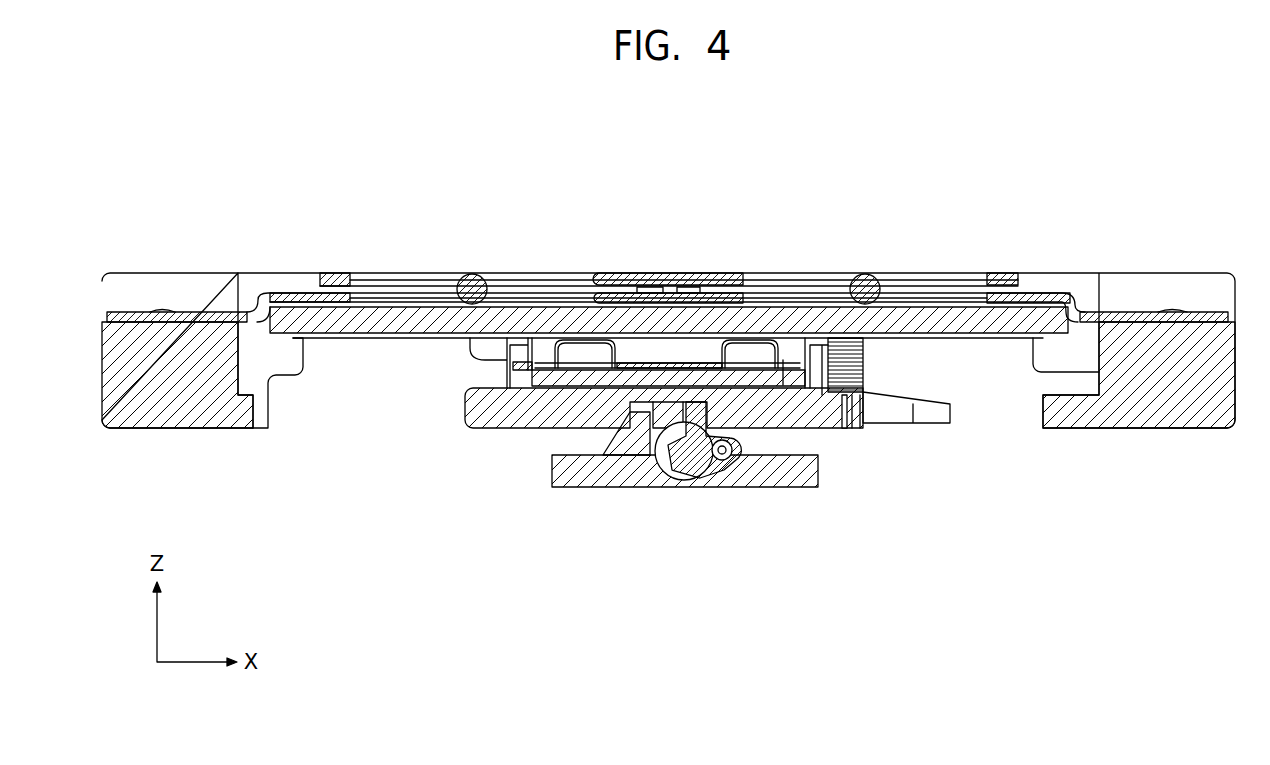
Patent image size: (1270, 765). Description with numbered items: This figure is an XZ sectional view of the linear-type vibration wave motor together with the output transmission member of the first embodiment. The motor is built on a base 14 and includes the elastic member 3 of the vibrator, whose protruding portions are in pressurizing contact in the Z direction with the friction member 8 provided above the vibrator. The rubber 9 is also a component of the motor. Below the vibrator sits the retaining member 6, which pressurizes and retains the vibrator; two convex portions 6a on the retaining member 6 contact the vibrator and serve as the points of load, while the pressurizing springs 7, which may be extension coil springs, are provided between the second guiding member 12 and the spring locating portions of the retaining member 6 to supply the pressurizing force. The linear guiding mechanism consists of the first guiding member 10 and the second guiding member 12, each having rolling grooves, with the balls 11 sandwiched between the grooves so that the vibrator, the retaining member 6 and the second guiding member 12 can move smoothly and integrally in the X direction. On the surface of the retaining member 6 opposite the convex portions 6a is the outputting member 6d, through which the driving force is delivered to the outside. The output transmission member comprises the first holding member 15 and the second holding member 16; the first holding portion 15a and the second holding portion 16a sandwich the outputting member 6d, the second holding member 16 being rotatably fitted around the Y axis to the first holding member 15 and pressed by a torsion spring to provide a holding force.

The elastic member 3 is at (684, 365).
The retaining member 6 is at (491, 415).
The convex portions 6a is at (666, 386).
The outputting member 6d is at (675, 400).
The pressurizing springs 7 is at (855, 385).
The friction member 8 is at (388, 320).
The rubber 9 is at (338, 288).
The first guiding member 10 is at (283, 296).
The balls 11 is at (473, 282).
The second guiding member 12 is at (616, 284).
The base 14 is at (1152, 430).
The first holding member 15 is at (788, 488).
The first holding portion 15a is at (632, 430).
The second holding member 16 is at (660, 488).
The second holding portion 16a is at (695, 442).